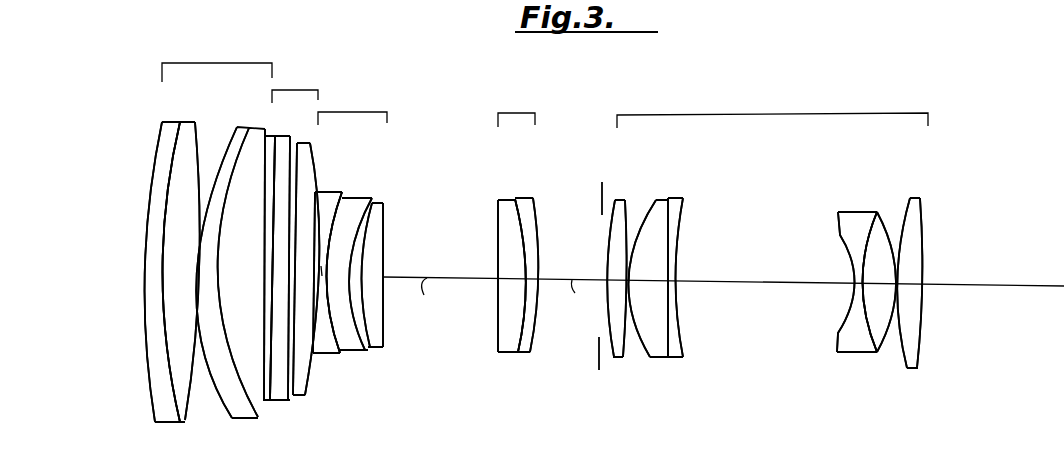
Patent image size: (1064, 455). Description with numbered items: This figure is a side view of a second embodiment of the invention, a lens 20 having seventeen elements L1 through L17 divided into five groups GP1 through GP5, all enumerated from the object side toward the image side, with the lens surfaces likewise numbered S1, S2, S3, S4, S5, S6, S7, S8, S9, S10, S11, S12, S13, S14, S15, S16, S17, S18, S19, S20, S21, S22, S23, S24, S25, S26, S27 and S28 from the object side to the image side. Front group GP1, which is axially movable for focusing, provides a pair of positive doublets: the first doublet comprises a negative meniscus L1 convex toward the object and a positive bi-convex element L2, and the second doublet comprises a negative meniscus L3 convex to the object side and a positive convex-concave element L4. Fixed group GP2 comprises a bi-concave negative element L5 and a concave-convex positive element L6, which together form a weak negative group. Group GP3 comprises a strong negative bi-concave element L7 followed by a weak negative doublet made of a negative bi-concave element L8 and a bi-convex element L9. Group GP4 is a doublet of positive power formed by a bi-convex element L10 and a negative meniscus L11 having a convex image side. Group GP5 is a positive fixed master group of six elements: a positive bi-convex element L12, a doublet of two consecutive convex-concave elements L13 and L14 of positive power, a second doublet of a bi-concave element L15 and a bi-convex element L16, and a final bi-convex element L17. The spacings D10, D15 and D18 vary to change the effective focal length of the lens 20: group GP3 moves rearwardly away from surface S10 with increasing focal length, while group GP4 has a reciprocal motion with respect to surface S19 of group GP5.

The lens 20 is at (457, 86).
The front group GP1 is at (217, 61).
The fixed group GP2 is at (297, 84).
The third group GP3 is at (352, 106).
The fourth group GP4 is at (518, 107).
The master group GP5 is at (772, 110).
The negative meniscus L1 is at (153, 387).
The positive bi-convex second element L2 is at (178, 350).
The negative meniscus L3 is at (233, 417).
The positive convex-concave element L4 is at (252, 385).
The bi-concave negative element L5 is at (272, 398).
The concave-convex positive element L6 is at (298, 380).
The strong negative bi-concave element L7 is at (325, 334).
The negative bi-concave element L8 is at (357, 330).
The bi-convex element L9 is at (377, 325).
The bi-convex element L10 is at (502, 328).
The negative meniscus L11 is at (525, 337).
The positive bi-convex element L12 is at (613, 357).
The convex-concave element L13 is at (655, 340).
The convex-concave element L14 is at (672, 347).
The bi-concave element L15 is at (852, 332).
The bi-convex element L16 is at (876, 335).
The bi-convex element L17 is at (912, 344).
The lens surface 1 S1 is at (162, 133).
The lens surface 2 S2 is at (177, 163).
The lens surface 3 S3 is at (193, 130).
The lens surface 4 S4 is at (233, 128).
The lens surface 5 S5 is at (256, 130).
The lens surface 6 S6 is at (265, 204).
The lens surface 7 S7 is at (274, 232).
The lens surface 8 S8 is at (288, 258).
The lens surface 9 S9 is at (295, 142).
The lens surface S10 is at (312, 170).
The lens surface 11 S11 is at (316, 192).
The lens surface 12 S12 is at (343, 197).
The lens surface 13 S13 is at (371, 223).
The lens surface 14 S14 is at (384, 201).
The lens surface 15 S15 is at (385, 263).
The lens surface 16 S16 is at (500, 215).
The lens surface 17 S17 is at (517, 202).
The lens surface 18 S18 is at (550, 196).
The lens surface S19 is at (609, 228).
The lens surface 20 S20 is at (626, 250).
The lens surface 21 S21 is at (645, 220).
The lens surface 22 S22 is at (673, 200).
The lens surface 23 S23 is at (681, 242).
The lens surface 24 S24 is at (845, 237).
The lens surface 25 S25 is at (868, 215).
The lens surface 26 S26 is at (890, 220).
The lens surface 27 S27 is at (902, 238).
The lens surface 28 S28 is at (924, 258).
The spacing D10 is at (321, 272).
The spacing D15 is at (448, 294).
The spacing D18 is at (577, 299).